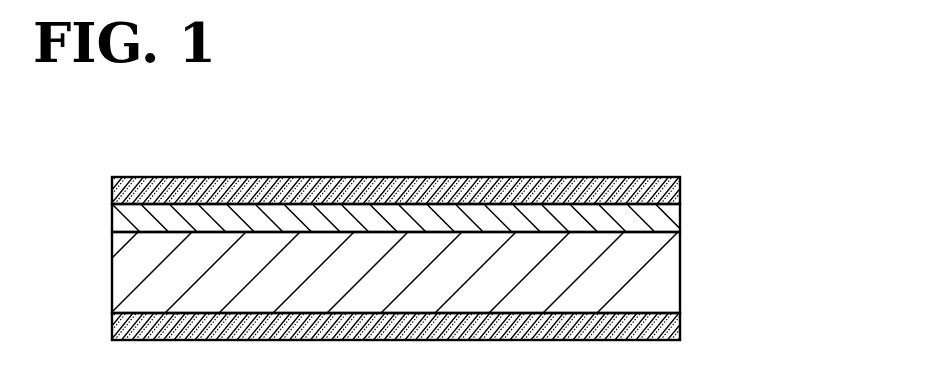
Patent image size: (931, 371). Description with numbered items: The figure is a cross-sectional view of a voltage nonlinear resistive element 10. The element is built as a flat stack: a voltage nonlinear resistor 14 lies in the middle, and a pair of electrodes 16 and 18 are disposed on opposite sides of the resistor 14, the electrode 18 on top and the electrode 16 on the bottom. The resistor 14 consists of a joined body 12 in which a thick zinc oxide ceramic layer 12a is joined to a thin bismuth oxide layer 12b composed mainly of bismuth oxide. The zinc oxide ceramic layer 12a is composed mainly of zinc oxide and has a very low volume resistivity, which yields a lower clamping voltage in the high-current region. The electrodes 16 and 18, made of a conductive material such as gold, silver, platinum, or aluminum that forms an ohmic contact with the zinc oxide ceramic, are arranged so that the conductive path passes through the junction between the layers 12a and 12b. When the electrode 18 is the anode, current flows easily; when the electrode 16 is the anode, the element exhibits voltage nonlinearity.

The voltage nonlinear resistive element 10 is at (449, 225).
The joined body 12 is at (462, 258).
The zinc oxide ceramic layer 12a is at (425, 272).
The bismuth oxide layer 12b is at (667, 222).
The voltage nonlinear resistor 14 is at (449, 258).
The electrode 16 is at (667, 329).
The electrode 18 is at (667, 191).